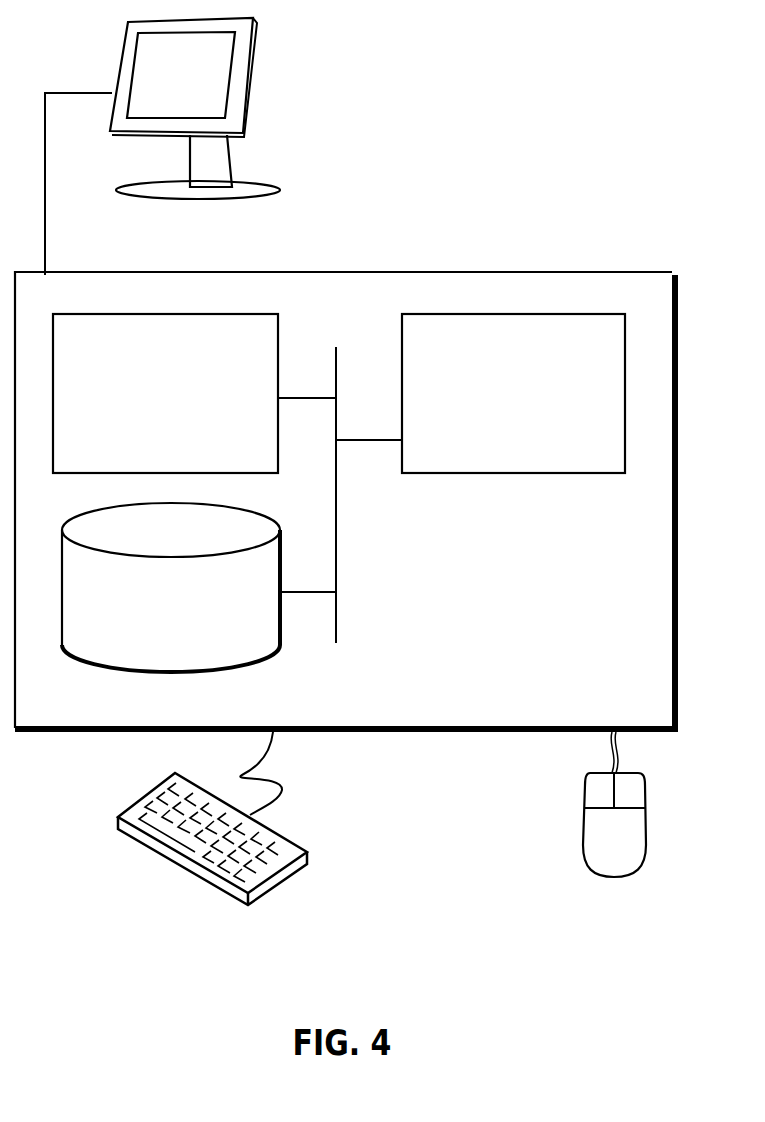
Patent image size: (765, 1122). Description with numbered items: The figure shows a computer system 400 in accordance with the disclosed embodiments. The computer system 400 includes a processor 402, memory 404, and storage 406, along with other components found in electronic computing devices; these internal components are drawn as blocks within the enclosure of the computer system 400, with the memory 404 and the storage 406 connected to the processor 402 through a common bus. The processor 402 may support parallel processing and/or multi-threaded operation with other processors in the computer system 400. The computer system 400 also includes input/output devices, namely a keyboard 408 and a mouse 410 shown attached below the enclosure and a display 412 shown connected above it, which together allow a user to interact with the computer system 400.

The computer system 400 is at (390, 250).
The processor 402 is at (498, 408).
The memory 404 is at (148, 408).
The storage 406 is at (153, 618).
The keyboard 408 is at (135, 838).
The mouse 410 is at (594, 850).
The display 412 is at (162, 146).